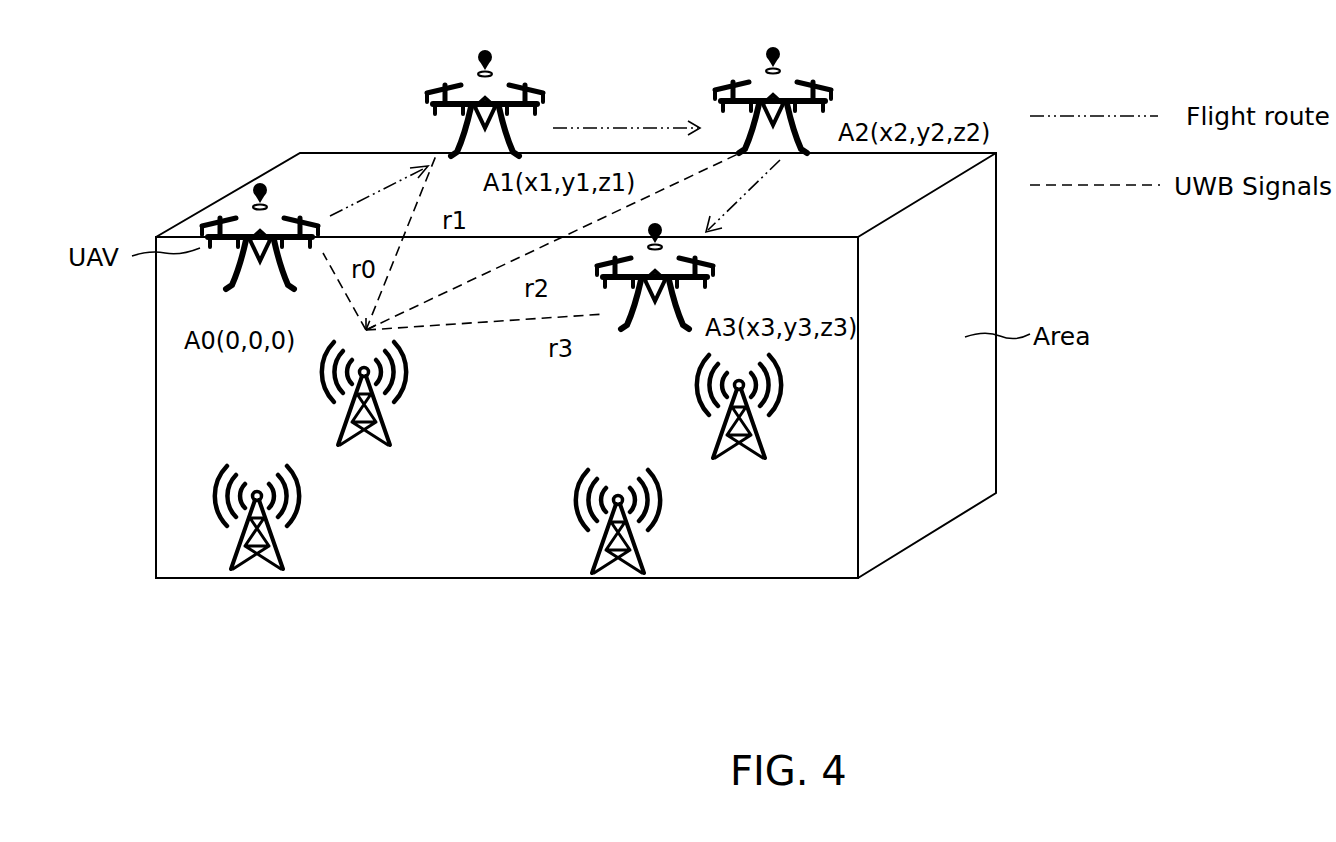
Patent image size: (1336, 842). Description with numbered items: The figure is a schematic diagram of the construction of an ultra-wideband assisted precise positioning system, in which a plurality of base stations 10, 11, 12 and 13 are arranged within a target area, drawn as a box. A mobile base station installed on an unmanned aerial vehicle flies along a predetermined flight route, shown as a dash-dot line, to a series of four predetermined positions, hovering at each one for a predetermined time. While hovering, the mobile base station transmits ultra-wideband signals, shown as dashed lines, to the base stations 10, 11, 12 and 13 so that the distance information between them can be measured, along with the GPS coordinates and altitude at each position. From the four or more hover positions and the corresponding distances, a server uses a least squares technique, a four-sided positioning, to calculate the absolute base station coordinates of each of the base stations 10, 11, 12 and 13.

The base station 10 is at (345, 414).
The base station 11 is at (720, 432).
The base station 12 is at (240, 540).
The base station 13 is at (600, 545).